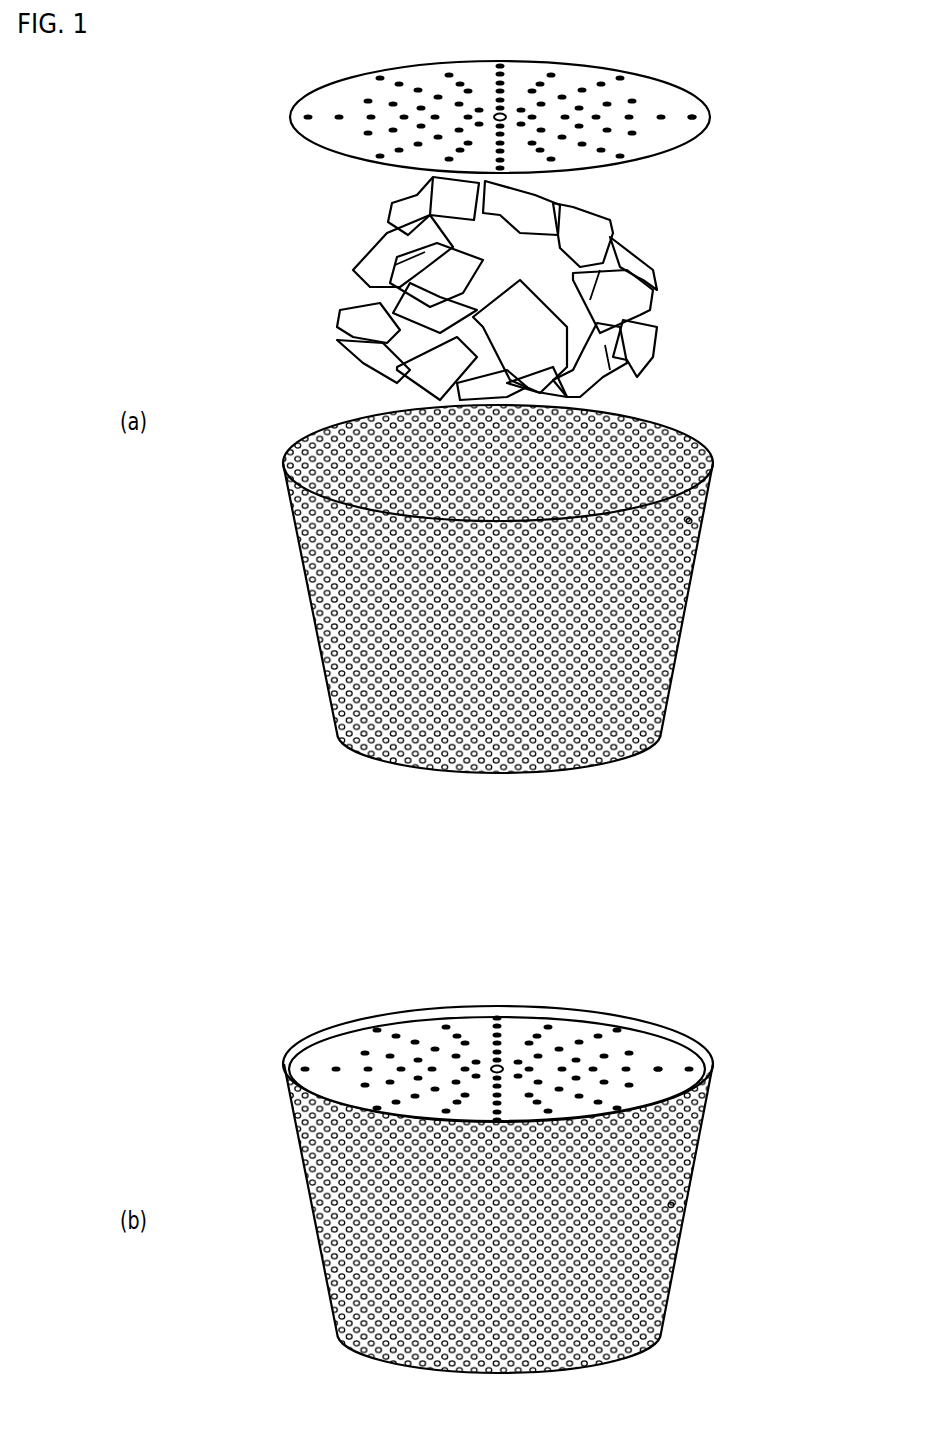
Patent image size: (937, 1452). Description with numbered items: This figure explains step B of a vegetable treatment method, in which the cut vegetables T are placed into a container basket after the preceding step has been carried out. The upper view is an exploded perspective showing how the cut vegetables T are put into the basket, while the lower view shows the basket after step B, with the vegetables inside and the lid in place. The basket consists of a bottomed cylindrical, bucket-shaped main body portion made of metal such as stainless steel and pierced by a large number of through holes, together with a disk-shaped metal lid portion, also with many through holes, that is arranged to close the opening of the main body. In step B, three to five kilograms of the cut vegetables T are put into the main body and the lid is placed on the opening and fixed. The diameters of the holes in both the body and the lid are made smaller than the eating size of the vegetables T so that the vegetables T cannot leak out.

The cut vegetables T is at (358, 300).